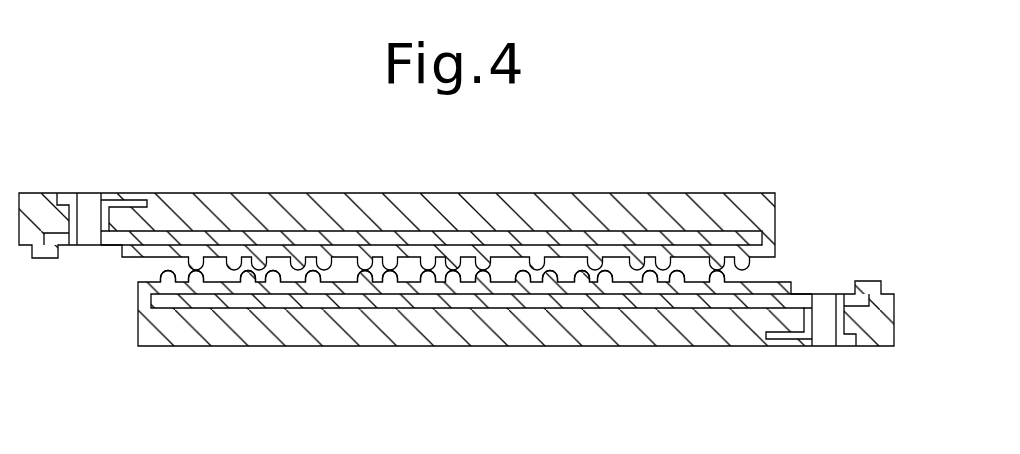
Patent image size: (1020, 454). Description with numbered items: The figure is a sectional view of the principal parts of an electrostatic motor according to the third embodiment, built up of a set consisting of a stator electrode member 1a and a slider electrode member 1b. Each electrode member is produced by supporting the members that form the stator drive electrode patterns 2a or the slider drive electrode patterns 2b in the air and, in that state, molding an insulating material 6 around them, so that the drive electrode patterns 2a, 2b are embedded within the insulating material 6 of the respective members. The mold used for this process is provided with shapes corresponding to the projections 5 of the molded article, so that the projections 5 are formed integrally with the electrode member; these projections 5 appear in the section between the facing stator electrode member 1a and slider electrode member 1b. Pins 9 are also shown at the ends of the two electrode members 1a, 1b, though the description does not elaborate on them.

The stator electrode member 1a is at (603, 372).
The slider electrode member 1b is at (359, 174).
The stator drive electrode patterns 2a is at (318, 302).
The slider drive electrode patterns 2b is at (459, 238).
The projections 5 is at (197, 279).
The insulating material 6 is at (762, 213).
The positioning pin 9 is at (91, 203).